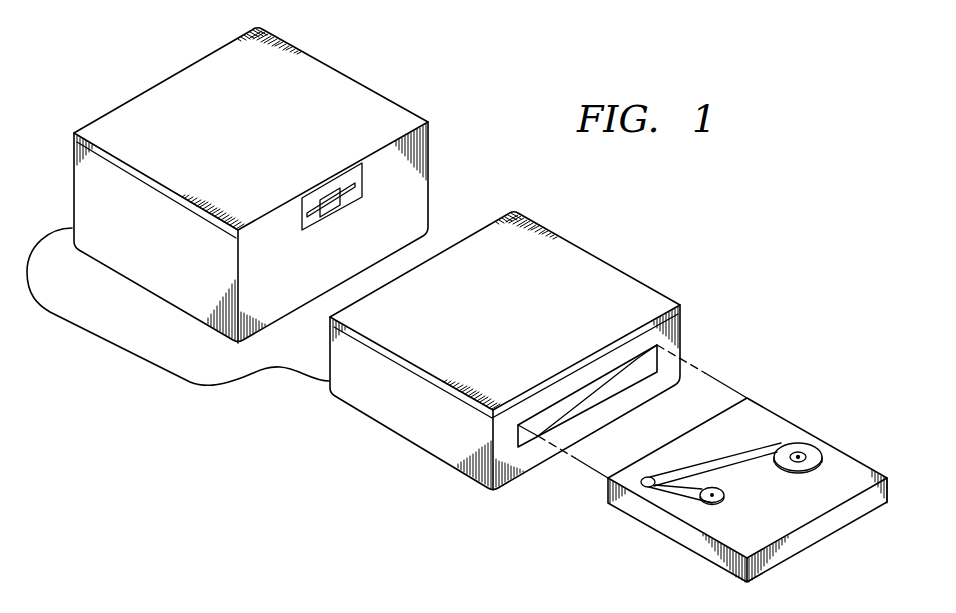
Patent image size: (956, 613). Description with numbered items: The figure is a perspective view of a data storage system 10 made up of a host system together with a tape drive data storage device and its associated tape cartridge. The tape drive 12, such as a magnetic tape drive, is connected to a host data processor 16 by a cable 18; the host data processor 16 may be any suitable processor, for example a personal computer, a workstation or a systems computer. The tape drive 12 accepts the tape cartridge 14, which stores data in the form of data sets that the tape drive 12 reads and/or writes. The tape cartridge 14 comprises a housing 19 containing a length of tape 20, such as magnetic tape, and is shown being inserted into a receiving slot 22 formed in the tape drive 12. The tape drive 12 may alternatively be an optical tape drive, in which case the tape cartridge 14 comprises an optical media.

The data storage system / host unit 10 is at (356, 51).
The tape drive data storage device 12 is at (590, 216).
The tape cartridge 14 is at (813, 402).
The host data processor 16 is at (147, 98).
The cable 18 is at (200, 385).
The housing 19 is at (813, 535).
The tape 20 is at (728, 463).
The receiving slot 22 is at (610, 385).